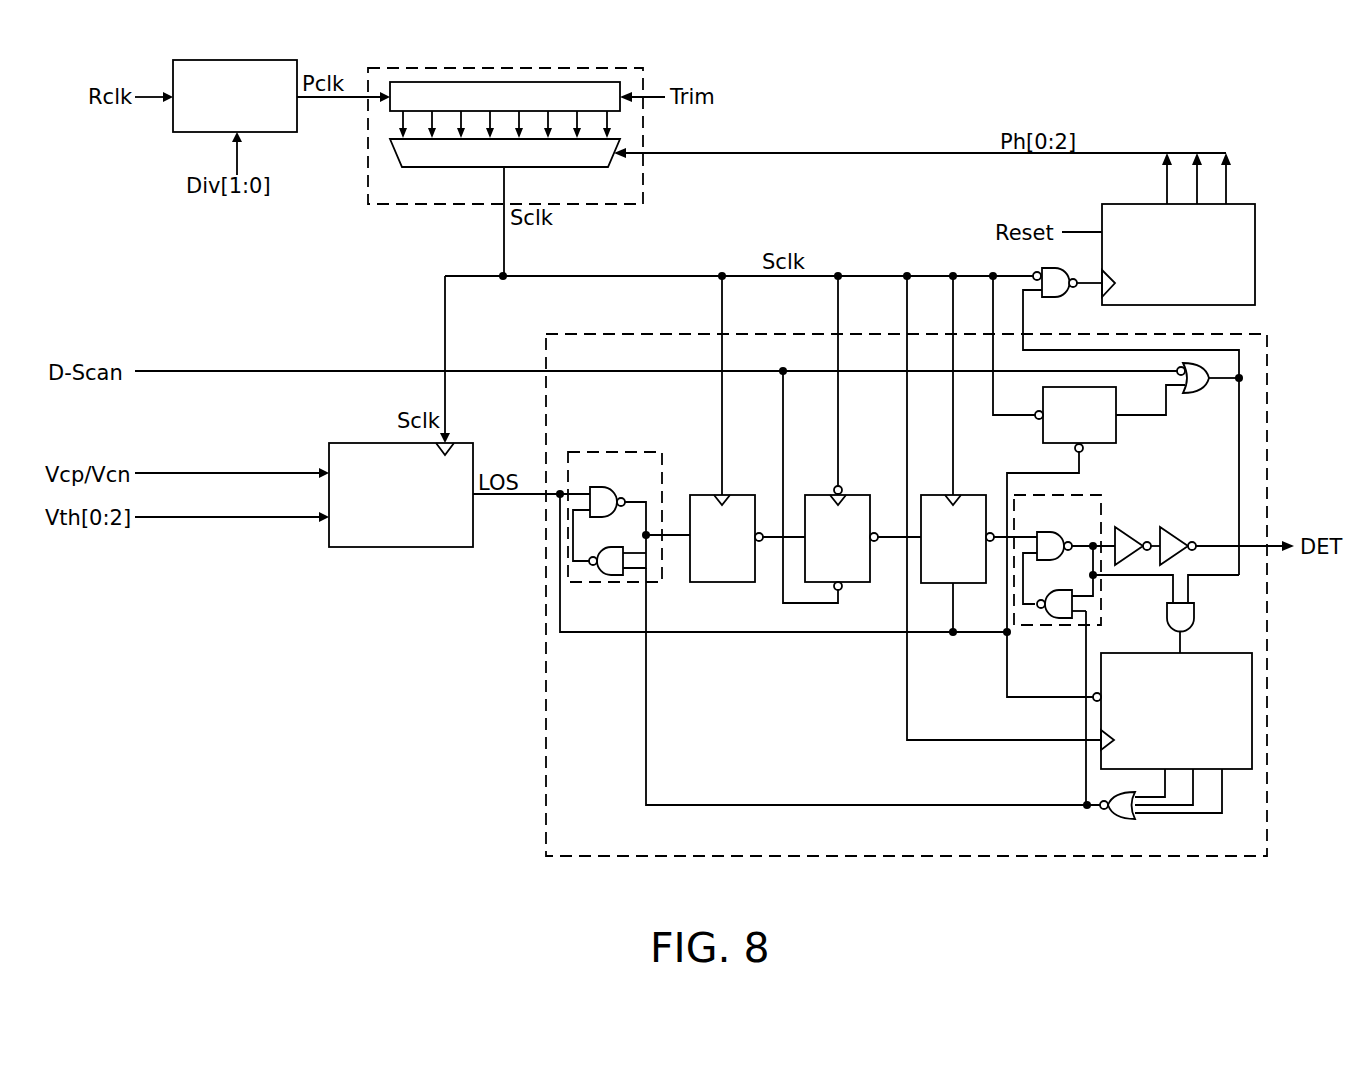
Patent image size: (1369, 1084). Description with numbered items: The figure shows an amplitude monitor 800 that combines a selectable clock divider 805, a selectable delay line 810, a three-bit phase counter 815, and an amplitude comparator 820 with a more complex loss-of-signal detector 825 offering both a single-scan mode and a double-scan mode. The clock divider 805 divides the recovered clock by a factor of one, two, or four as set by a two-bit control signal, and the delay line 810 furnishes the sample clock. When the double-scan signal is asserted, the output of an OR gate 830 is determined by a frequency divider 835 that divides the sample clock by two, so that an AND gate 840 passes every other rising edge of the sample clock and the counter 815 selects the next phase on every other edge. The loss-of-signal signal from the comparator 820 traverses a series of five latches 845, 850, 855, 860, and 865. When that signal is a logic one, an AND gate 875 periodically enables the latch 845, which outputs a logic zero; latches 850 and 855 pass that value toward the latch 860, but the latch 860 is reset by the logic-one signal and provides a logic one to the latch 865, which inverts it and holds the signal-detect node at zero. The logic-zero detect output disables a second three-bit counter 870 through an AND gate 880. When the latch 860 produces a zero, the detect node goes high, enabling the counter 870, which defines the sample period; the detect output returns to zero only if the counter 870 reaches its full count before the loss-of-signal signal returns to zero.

The amplitude monitor 800 is at (249, 866).
The selectable clock divider 805 is at (235, 96).
The selectable delay line 810 is at (505, 136).
The three-bit phase counter 815 is at (1178, 229).
The amplitude comparator 820 is at (401, 495).
The loss-of-signal (LOS) detector 825 is at (906, 595).
The OR gate 830 is at (1217, 413).
The frequency divider 835 is at (1105, 443).
The AND gate 840 is at (1052, 297).
The latch 845 is at (629, 517).
The latch 850 is at (700, 582).
The latch 855 is at (841, 487).
The latch 860 is at (970, 495).
The latch 865 is at (1064, 560).
The second three-bit counter 870 is at (1172, 733).
The AND gate 875 is at (1112, 820).
The AND gate 880 is at (1167, 623).